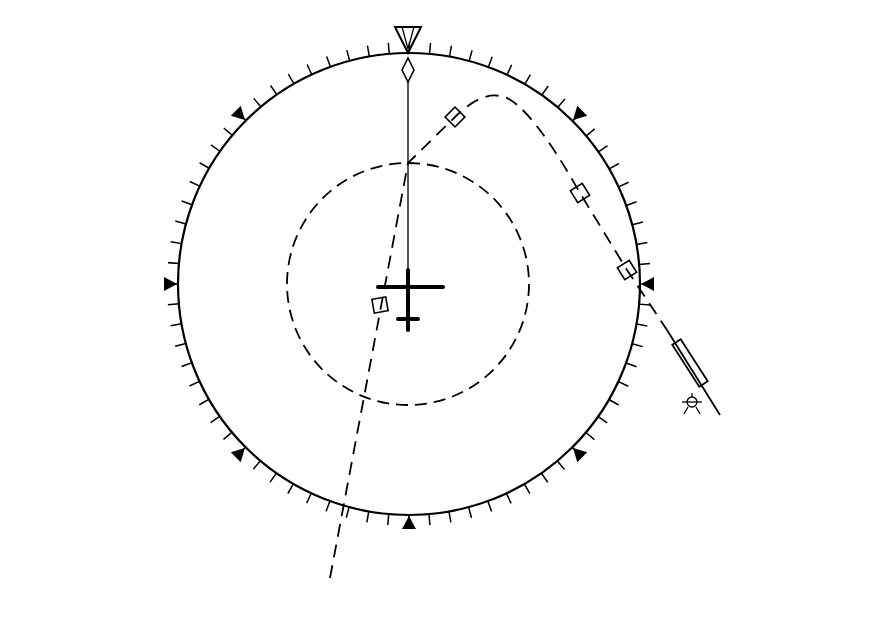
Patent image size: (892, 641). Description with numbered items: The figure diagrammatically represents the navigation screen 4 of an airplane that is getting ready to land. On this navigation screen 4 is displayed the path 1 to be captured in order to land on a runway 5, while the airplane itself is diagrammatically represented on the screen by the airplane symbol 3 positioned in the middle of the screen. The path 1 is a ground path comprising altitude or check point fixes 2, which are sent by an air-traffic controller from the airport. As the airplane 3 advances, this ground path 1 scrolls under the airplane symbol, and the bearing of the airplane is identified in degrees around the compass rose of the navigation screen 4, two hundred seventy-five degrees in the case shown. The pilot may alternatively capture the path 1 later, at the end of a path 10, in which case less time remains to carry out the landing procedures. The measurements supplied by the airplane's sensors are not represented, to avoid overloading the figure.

The path 1 is at (605, 222).
The check point fixes 2 is at (592, 190).
The airplane 3 is at (413, 305).
The navigation screen 4 is at (134, 189).
The runway 5 is at (748, 352).
The path 10 is at (409, 317).